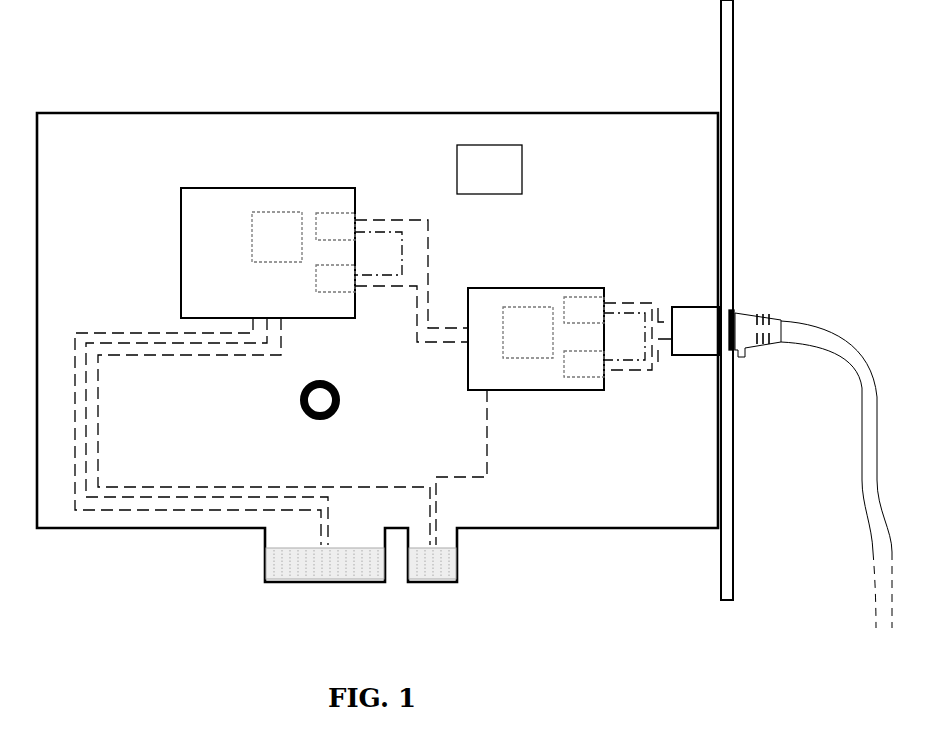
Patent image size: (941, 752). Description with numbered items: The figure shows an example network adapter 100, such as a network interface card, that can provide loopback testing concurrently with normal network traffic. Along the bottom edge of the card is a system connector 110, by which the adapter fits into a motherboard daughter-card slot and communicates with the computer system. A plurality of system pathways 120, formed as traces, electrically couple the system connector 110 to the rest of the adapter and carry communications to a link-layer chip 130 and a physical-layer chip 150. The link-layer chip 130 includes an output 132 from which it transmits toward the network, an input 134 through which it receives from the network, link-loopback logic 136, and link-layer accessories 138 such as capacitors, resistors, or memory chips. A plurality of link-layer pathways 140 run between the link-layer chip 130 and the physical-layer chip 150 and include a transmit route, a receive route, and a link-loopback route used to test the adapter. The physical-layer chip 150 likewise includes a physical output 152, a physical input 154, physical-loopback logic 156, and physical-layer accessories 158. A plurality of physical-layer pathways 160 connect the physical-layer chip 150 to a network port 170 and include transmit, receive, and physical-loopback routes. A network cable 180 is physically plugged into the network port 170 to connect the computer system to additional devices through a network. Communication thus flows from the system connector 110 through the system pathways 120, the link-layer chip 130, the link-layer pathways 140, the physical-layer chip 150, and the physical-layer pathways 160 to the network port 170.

The network adapter 100 is at (350, 78).
The system connector 110 is at (253, 572).
The system pathways 120 is at (425, 510).
The link-layer chip 130 is at (230, 253).
The output 132 is at (335, 226).
The input 134 is at (335, 278).
The link-loopback logic 136 is at (277, 237).
The link-layer accessories 138 is at (292, 420).
The link-layer pathways 140 is at (417, 355).
The physical-layer chip 150 is at (536, 375).
The physical output 152 is at (584, 310).
The physical input 154 is at (584, 364).
The physical-loopback logic 156 is at (528, 332).
The physical-layer accessories 158 is at (489, 169).
The physical-layer pathways 160 is at (644, 392).
The network port 170 is at (695, 331).
The network cable 180 is at (860, 386).